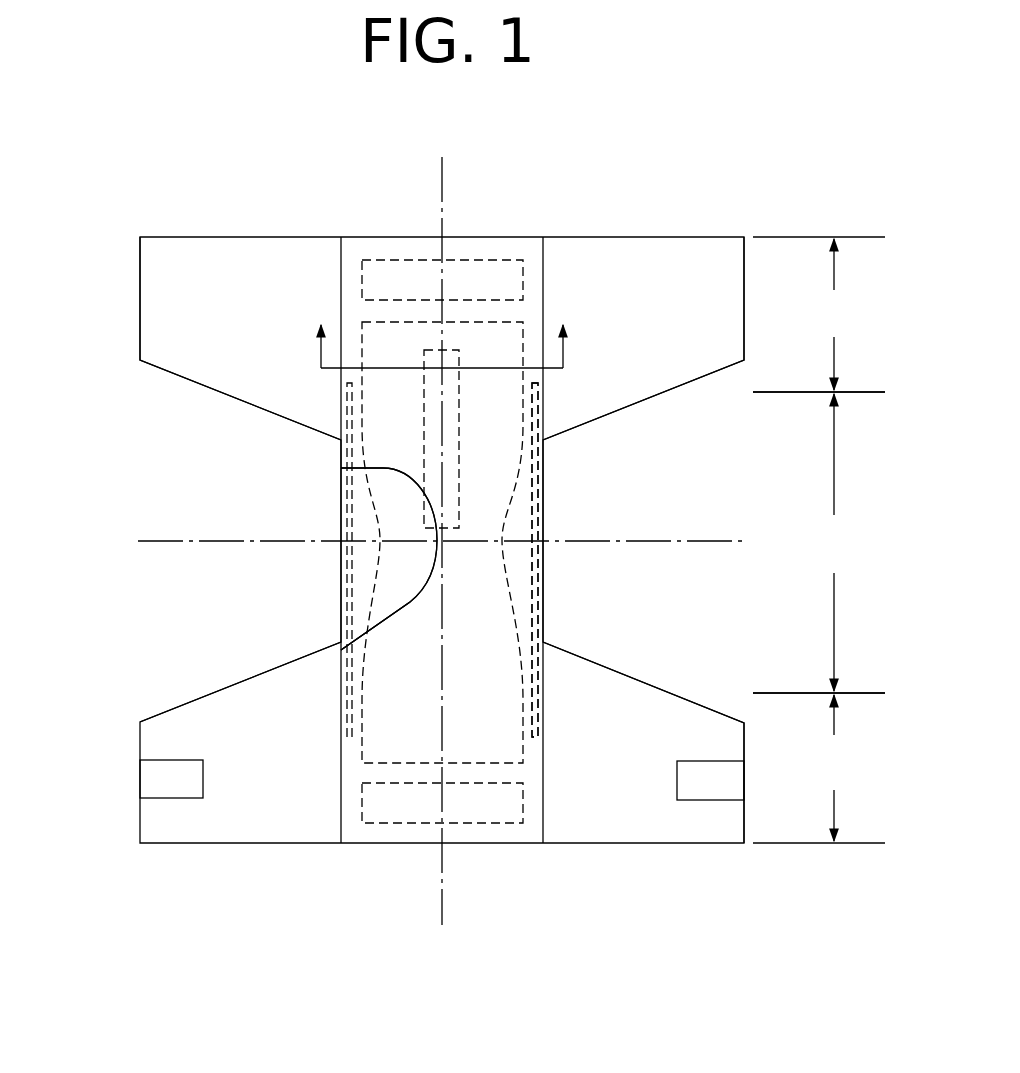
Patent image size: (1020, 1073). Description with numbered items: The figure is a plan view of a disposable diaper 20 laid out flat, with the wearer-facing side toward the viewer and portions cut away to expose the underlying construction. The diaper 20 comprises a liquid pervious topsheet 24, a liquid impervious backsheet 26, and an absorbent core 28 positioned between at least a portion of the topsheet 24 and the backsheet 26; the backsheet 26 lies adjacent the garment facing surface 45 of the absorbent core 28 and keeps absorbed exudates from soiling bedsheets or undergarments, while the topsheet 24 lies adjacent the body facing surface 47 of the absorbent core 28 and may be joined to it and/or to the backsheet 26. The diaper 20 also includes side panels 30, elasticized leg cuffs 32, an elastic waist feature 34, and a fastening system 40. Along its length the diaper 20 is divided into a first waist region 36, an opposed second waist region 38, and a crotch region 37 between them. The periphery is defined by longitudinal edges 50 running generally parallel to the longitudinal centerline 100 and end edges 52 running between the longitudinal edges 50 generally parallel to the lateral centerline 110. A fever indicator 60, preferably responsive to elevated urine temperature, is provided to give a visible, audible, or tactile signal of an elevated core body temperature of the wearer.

The diaper 20 is at (337, 212).
The topsheet 24 is at (490, 487).
The backsheet 26 is at (362, 530).
The absorbent core 28 is at (402, 570).
The side panels 30 is at (612, 380).
The elasticized leg cuffs 32 is at (540, 627).
The elastic waist feature 34 is at (415, 275).
The first waist region 36 is at (819, 314).
The crotch region 37 is at (819, 542).
The second waist region 38 is at (819, 768).
The fastening system 40 is at (155, 773).
The garment facing surface 45 is at (396, 514).
The body facing surface 47 is at (398, 594).
The longitudinal edges 50 is at (541, 574).
The end edges 52 is at (208, 237).
The fever indicator 60 is at (455, 355).
The longitudinal centerline 100 is at (445, 187).
The lateral centerline 110 is at (166, 540).